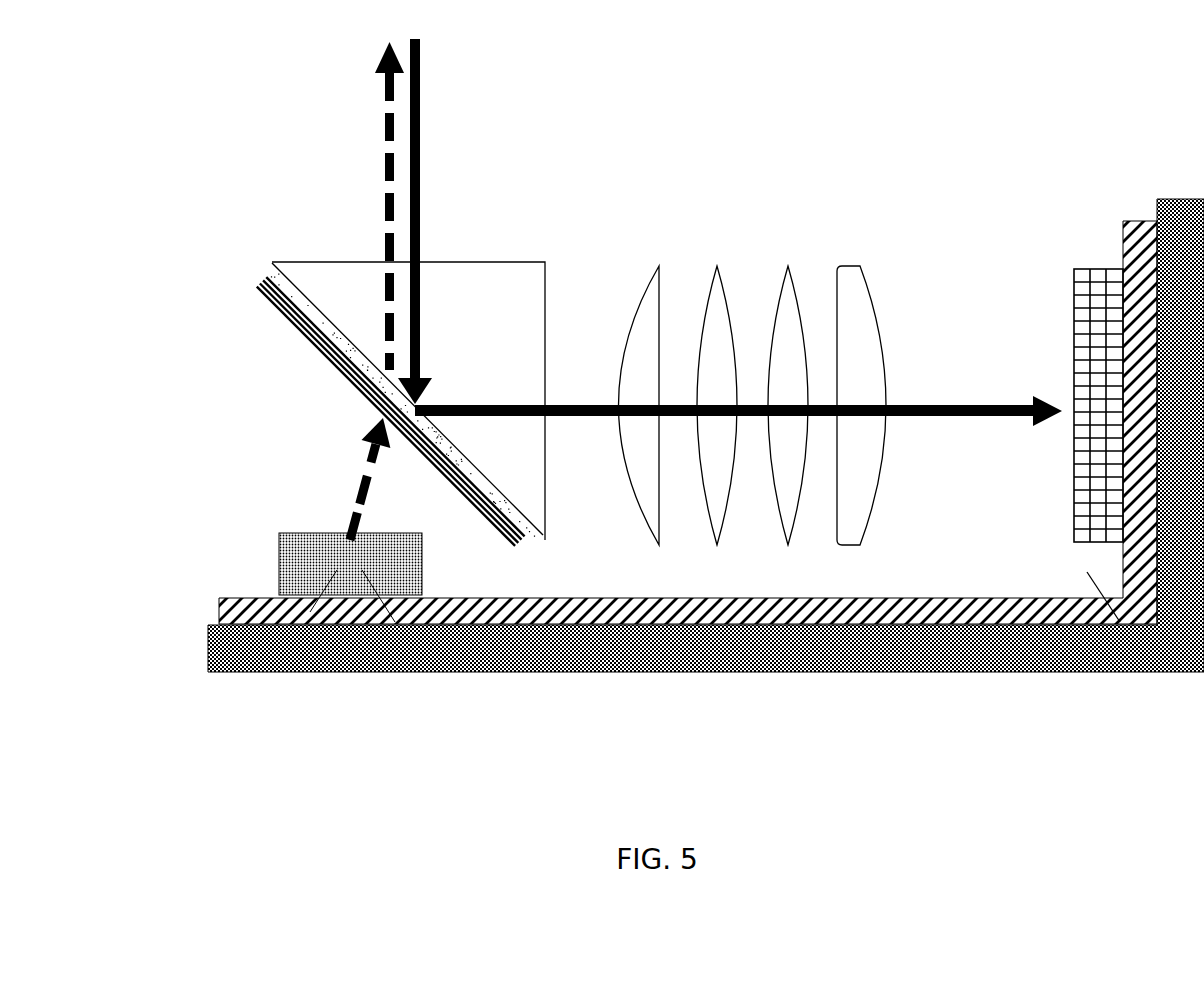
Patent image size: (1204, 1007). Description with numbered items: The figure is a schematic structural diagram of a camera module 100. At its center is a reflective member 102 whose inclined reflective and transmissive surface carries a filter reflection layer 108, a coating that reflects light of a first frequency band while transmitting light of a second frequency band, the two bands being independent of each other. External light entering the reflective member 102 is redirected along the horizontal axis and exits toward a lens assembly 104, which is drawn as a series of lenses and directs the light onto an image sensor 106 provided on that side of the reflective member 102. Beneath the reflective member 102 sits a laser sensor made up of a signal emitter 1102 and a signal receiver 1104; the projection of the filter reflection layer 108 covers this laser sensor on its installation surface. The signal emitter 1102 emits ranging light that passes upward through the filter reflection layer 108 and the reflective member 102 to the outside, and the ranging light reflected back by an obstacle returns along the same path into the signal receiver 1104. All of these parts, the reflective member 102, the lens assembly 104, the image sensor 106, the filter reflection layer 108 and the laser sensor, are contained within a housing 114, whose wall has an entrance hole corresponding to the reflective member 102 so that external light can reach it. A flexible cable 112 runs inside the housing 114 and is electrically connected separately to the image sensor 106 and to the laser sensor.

The camera module 100 is at (766, 92).
The reflective member 102 is at (545, 510).
The lens assembly 104 is at (657, 502).
The image sensor 106 is at (1131, 672).
The filter reflection layer 108 is at (367, 393).
The flexible cable 112 is at (753, 672).
The housing 114 is at (880, 672).
The signal emitter 1102 is at (413, 672).
The signal receiver 1104 is at (292, 672).